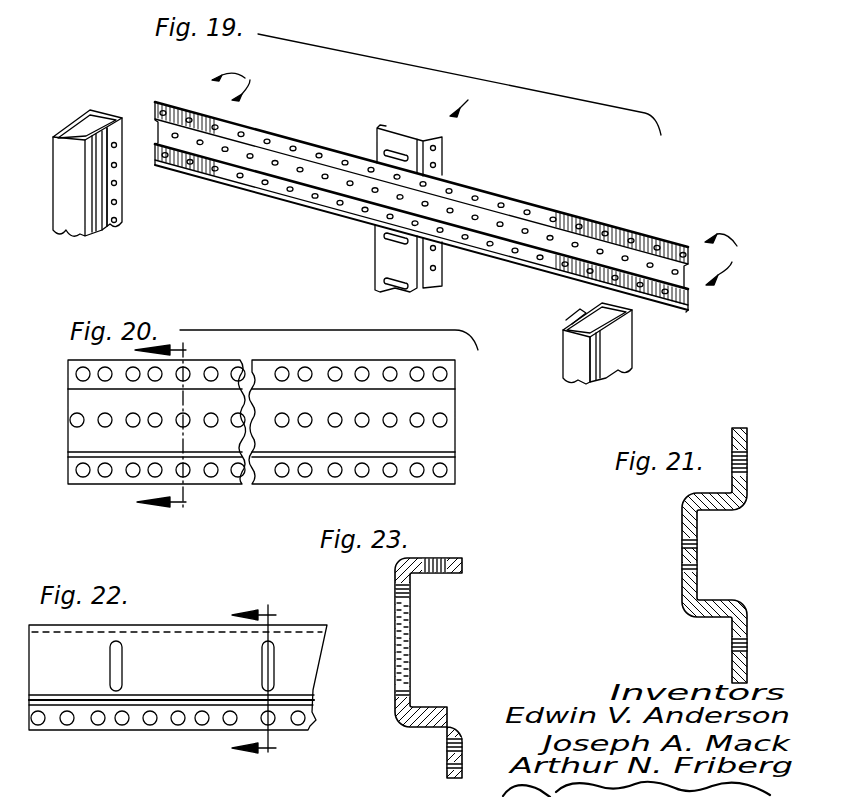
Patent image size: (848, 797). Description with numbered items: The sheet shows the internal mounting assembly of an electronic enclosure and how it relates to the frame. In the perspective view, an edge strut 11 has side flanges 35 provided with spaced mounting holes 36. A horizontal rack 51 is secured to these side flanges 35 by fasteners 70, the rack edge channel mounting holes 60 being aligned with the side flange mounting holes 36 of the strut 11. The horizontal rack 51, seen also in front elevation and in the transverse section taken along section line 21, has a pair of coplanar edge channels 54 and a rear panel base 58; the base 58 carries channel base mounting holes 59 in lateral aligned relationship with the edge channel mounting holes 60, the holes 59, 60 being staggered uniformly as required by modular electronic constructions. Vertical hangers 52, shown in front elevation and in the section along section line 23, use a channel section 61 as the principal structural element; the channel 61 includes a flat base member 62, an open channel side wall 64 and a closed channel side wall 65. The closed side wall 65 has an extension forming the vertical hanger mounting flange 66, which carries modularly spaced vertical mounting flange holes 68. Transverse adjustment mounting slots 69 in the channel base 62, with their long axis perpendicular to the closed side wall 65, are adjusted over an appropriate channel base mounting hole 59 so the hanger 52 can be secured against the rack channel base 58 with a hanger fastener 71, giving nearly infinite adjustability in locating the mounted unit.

In FIG. 19, the edge strut 11 is at (62, 205).
In FIG. 20, the section line 21— 21 is at (176, 427).
In FIG. 22, the section line 23— 23 is at (269, 681).
In FIG. 19, the side flange 35 is at (122, 207).
In FIG. 19, the mounting hole 36 is at (118, 228).
In FIG. 19, the horizontal rack 51 is at (421, 229).
In FIG. 21, the horizontal rack 51 is at (691, 547).
In FIG. 19, the vertical hanger 52 is at (424, 193).
In FIG. 22, the vertical hanger 52 is at (198, 665).
In FIG. 23, the vertical hanger 52 is at (441, 657).
In FIG. 19, the coplanar edge channel 54 is at (421, 229).
In FIG. 20, the coplanar edge channel 54 is at (401, 370).
In FIG. 21, the coplanar edge channel 54 is at (738, 426).
In FIG. 19, the rear panel base 58 is at (330, 150).
In FIG. 20, the rear panel base 58 is at (450, 402).
In FIG. 21, the rear panel base 58 is at (682, 580).
In FIG. 19, the channel base mounting hole 59 is at (195, 134).
In FIG. 20, the channel base mounting hole 59 is at (425, 426).
In FIG. 21, the channel base mounting hole 59 is at (682, 545).
In FIG. 19, the edge channel mounting hole 60 is at (300, 118).
In FIG. 20, the edge channel mounting hole 60 is at (335, 372).
In FIG. 21, the edge channel mounting hole 60 is at (748, 452).
In FIG. 22, the channel section 61 is at (330, 660).
In FIG. 23, the channel section 61 is at (420, 628).
In FIG. 22, the flat base member 62 is at (300, 686).
In FIG. 22, the open channel side wall 64 is at (195, 626).
In FIG. 23, the open channel side wall 64 is at (455, 558).
In FIG. 22, the closed channel side wall 65 is at (210, 695).
In FIG. 23, the closed channel side wall 65 is at (436, 710).
In FIG. 22, the vertical hanger mounting flange 66 is at (195, 722).
In FIG. 23, the vertical hanger mounting flange 66 is at (447, 736).
In FIG. 19, the vertical mounting flange hole 68 is at (458, 163).
In FIG. 22, the vertical mounting flange hole 68 is at (98, 724).
In FIG. 23, the vertical mounting flange hole 68 is at (448, 762).
In FIG. 19, the transverse adjustment mounting slot 69 is at (398, 152).
In FIG. 22, the transverse adjustment mounting slot 69 is at (121, 668).
In FIG. 23, the transverse adjustment mounting slot 69 is at (411, 646).
In FIG. 19, the fastener 70 is at (485, 176).
In FIG. 19, the hanger fastener 71 is at (465, 101).